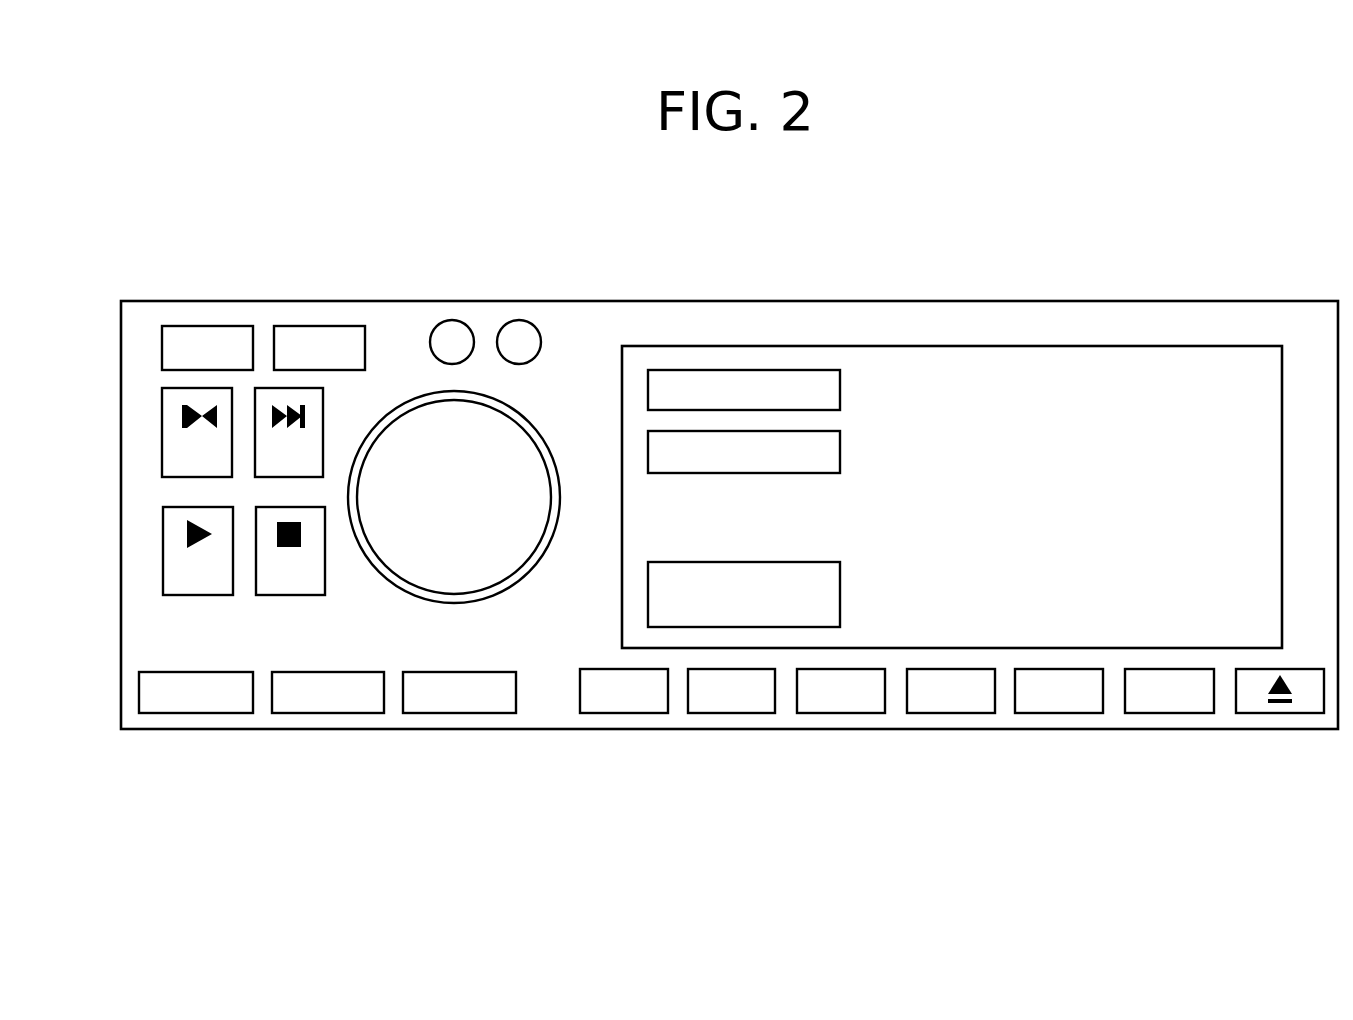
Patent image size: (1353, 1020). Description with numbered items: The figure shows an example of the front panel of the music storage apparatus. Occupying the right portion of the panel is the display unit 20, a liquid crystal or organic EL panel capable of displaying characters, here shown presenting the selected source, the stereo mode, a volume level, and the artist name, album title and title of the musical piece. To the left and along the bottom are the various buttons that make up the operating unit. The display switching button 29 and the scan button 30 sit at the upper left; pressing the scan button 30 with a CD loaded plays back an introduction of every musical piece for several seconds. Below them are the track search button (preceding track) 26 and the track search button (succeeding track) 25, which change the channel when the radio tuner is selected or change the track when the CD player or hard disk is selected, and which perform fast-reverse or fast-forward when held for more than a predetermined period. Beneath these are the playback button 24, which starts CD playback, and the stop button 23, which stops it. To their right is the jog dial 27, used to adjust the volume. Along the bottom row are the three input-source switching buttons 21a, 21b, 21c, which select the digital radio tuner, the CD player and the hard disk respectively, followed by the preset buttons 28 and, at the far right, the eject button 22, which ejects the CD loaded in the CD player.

The display unit 20 is at (1132, 346).
The input-source switching button 21a is at (205, 713).
The input-source switching button 21b is at (340, 713).
The input-source switching button 21c is at (474, 713).
The eject button 22 is at (1290, 713).
The stop button 23 is at (290, 507).
The playback button 24 is at (163, 572).
The track search button (succeeding track) 25 is at (323, 406).
The track search button (preceding track) 26 is at (162, 438).
The jog dial 27 is at (540, 433).
The preset buttons 28 is at (722, 713).
The display switching button 29 is at (207, 326).
The scan button 30 is at (325, 326).